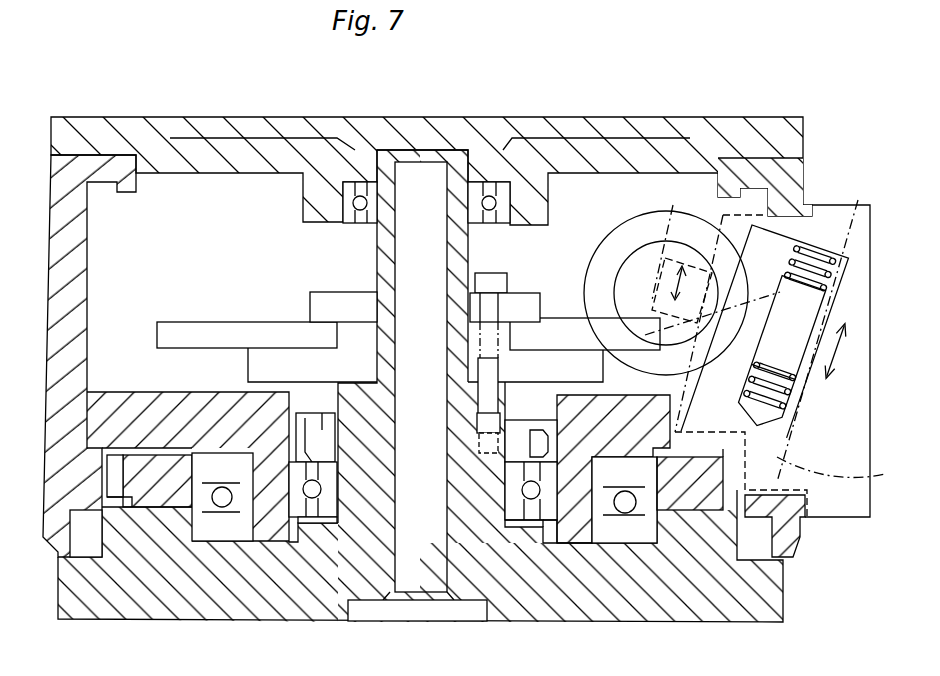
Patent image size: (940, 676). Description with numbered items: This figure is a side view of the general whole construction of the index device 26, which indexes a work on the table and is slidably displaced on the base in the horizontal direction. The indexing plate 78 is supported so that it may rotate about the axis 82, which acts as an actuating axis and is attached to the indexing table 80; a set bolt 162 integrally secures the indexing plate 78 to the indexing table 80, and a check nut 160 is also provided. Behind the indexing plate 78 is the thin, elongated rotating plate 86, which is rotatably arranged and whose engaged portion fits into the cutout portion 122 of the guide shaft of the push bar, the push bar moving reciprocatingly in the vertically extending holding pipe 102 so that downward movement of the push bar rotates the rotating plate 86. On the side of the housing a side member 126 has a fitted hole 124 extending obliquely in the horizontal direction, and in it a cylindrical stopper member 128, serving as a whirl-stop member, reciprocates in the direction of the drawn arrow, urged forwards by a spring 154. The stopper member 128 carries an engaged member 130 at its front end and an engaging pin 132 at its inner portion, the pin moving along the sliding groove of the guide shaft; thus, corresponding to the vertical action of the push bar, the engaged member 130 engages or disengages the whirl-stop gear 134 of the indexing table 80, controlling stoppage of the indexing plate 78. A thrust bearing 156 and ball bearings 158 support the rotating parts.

The index device 26 is at (558, 111).
The indexing plate 78 is at (246, 368).
The indexing table 80 is at (286, 600).
The axis 82 is at (418, 254).
The rotating plate 86 is at (233, 318).
The holding pipe 102 is at (632, 236).
The cutout portion 122 is at (636, 317).
The fitted hole 124 is at (822, 276).
The side member 126 is at (871, 407).
The stopper member 128 is at (845, 469).
The engaged member 130 is at (742, 535).
The engaging pin 132 is at (712, 258).
The whirl-stop gear 134 is at (733, 488).
The spring 154 is at (835, 247).
The thrust bearing 156 is at (218, 530).
The ball bearings 158 is at (350, 226).
The check nut 160 is at (523, 440).
The set bolt 162 is at (492, 286).